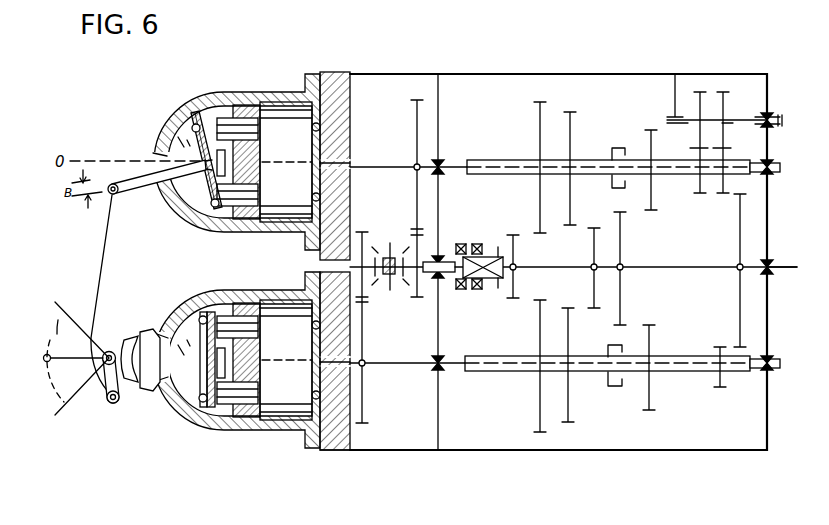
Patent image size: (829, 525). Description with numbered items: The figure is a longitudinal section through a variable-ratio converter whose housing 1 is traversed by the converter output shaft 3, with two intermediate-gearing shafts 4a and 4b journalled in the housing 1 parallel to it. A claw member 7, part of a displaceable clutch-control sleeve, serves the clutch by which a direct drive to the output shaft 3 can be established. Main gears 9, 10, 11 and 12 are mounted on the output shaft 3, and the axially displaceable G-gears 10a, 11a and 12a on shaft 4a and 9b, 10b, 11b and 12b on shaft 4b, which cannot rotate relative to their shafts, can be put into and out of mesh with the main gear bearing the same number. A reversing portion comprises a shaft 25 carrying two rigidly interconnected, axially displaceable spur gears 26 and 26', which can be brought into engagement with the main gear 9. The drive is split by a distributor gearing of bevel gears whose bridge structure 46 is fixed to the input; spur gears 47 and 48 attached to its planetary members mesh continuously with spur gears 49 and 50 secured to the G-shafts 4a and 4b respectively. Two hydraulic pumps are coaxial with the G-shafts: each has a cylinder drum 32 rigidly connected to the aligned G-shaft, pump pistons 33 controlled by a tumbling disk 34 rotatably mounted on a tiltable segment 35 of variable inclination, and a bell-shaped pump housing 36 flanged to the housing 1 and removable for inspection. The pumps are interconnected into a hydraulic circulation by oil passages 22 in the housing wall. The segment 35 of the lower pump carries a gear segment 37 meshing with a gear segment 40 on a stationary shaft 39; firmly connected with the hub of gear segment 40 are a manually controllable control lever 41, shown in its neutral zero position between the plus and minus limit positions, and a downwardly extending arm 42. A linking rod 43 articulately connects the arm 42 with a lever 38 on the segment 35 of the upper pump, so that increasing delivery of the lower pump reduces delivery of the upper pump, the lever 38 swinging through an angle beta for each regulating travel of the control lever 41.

The housing 1 is at (610, 79).
The converter output shaft 3 is at (795, 270).
The intermediate-gearing shaft 4a is at (465, 164).
The intermediate-gearing shaft 4b is at (397, 366).
The claw member 7 is at (474, 288).
The main gear 9 is at (743, 322).
The G-gear 9b is at (720, 389).
The main gear 10 is at (621, 306).
The G-gear 10a is at (649, 130).
The G-gear 10b is at (647, 412).
The main gear 11 is at (593, 258).
The G-gear 11a is at (569, 110).
The G-gear 11b is at (565, 424).
The main gear 12 is at (514, 264).
The G-gear 12a is at (538, 100).
The gear 12b is at (532, 434).
The oil passages 22 is at (344, 72).
The shaft 25 is at (745, 120).
The spur gear 26 is at (706, 122).
The spur gear 26' is at (736, 122).
The cylinder drum 32 is at (274, 120).
The pump pistons 33 is at (228, 123).
The tumbling disk 34 is at (206, 114).
The tiltable segment 35 is at (182, 140).
The pump housing 36 is at (190, 112).
The gear segment 37 is at (150, 384).
The lever 38 is at (123, 196).
The stationary shaft 39 is at (109, 351).
The gear segment 40 is at (127, 338).
The control lever 41 is at (62, 366).
The arm 42 is at (115, 403).
The linking rod 43 is at (95, 296).
The bridge structure 46 is at (390, 243).
The spur gear 47 is at (357, 233).
The spur gear 48 is at (438, 238).
The spur gear 49 is at (415, 100).
The spur gear 50 is at (353, 432).